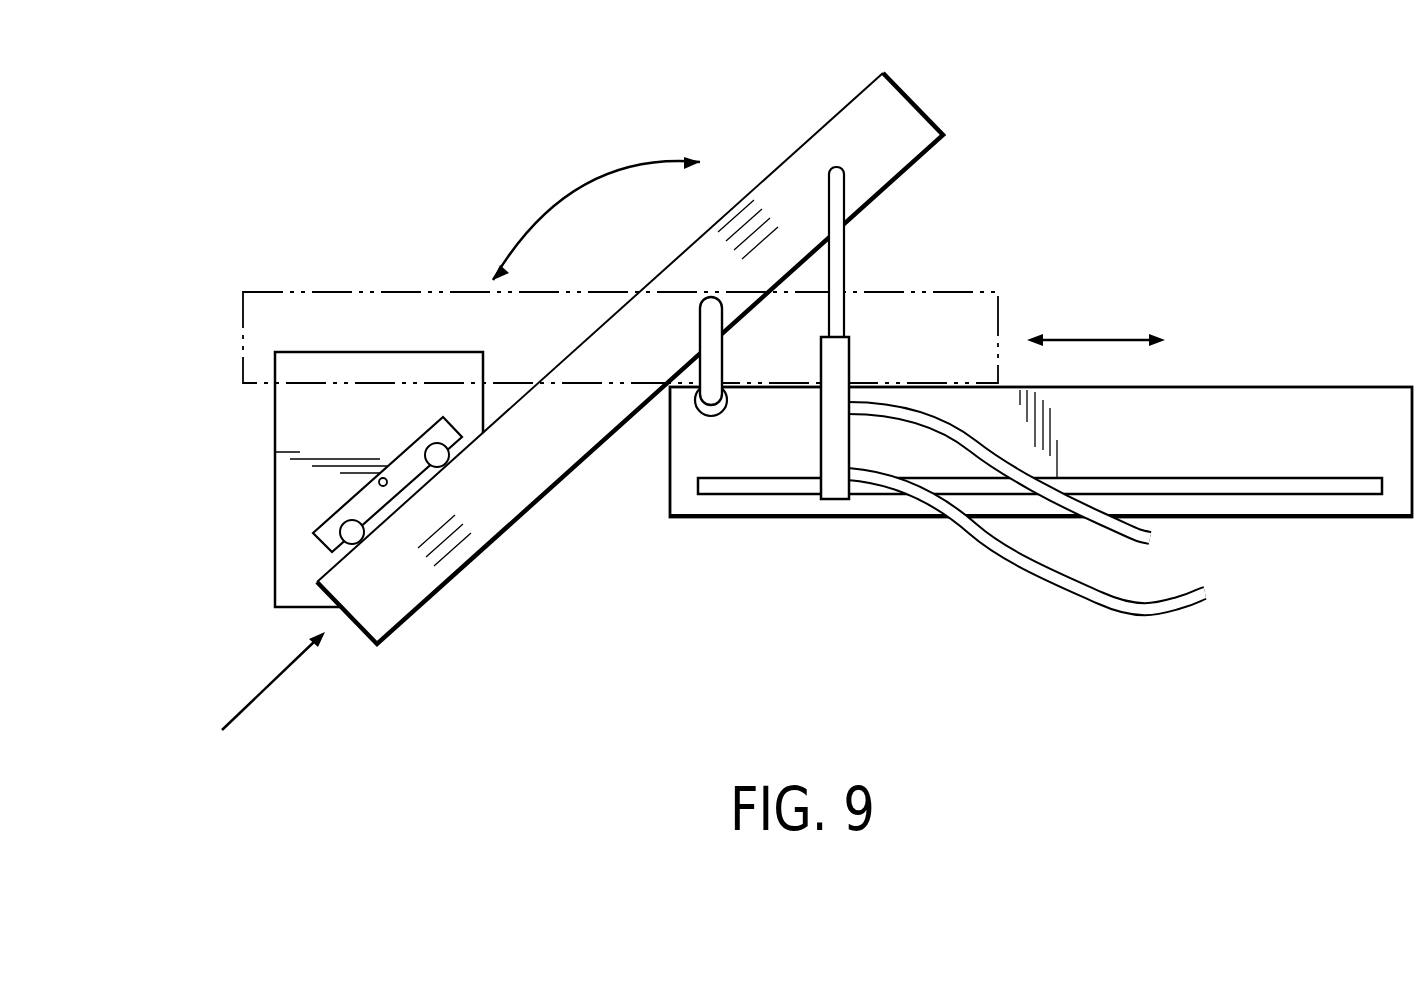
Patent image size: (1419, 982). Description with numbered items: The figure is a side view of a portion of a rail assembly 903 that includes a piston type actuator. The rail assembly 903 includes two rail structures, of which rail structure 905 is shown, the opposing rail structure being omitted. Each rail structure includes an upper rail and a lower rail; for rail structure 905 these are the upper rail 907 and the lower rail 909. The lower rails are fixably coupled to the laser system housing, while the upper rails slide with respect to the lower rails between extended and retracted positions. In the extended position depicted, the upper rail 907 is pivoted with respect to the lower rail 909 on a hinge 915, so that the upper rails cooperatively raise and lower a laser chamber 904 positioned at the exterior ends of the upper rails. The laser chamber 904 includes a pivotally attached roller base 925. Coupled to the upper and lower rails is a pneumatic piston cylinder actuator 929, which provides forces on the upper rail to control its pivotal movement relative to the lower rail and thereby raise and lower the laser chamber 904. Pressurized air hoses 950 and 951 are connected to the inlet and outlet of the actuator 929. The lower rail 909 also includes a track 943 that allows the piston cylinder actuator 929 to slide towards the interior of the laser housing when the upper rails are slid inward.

The rail assembly 903 is at (735, 147).
The laser chamber 904 is at (262, 420).
The rail structure 905 is at (795, 556).
The upper rail 907 is at (907, 118).
The lower rail 909 is at (1228, 462).
The hinge 915 is at (705, 343).
The roller base 925 is at (357, 498).
The pneumatic piston cylinder actuator 929 is at (838, 250).
The track 943 is at (1300, 478).
The pressurized air hose 950 is at (1152, 548).
The pressurized air hose 951 is at (1200, 612).